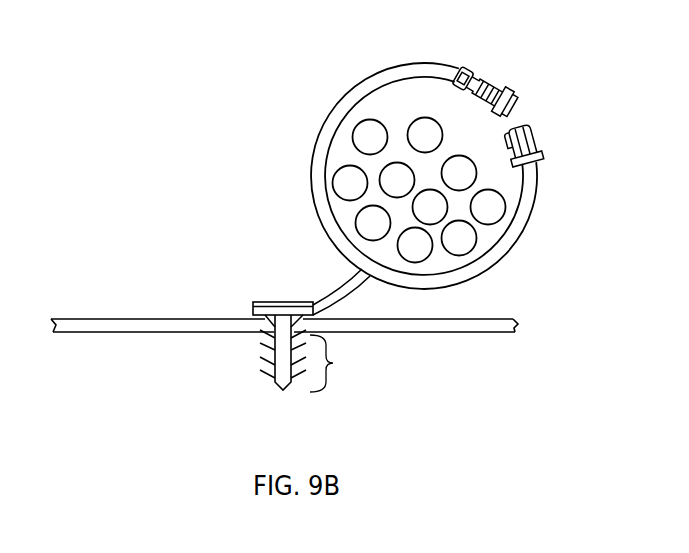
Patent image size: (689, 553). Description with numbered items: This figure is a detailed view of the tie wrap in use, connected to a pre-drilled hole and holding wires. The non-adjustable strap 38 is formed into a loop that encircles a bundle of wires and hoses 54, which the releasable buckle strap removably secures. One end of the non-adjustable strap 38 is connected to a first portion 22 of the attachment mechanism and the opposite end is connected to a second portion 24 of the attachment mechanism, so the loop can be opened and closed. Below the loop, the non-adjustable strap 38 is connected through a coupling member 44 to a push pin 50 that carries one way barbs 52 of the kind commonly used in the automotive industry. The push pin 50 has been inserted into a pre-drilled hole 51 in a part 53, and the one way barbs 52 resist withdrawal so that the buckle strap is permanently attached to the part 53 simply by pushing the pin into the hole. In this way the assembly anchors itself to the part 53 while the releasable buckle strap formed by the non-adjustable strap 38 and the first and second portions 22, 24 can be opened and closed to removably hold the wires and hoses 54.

The first portion 22 is at (540, 130).
The second portion 24 is at (487, 76).
The non-adjustable strap 38 is at (329, 114).
The coupling member 44 is at (332, 292).
The push pin 50 is at (279, 390).
The pre-drilled hole 51 is at (265, 347).
The one way barbs 52 is at (333, 363).
The part 53 is at (90, 323).
The wires and hoses 54 is at (493, 208).